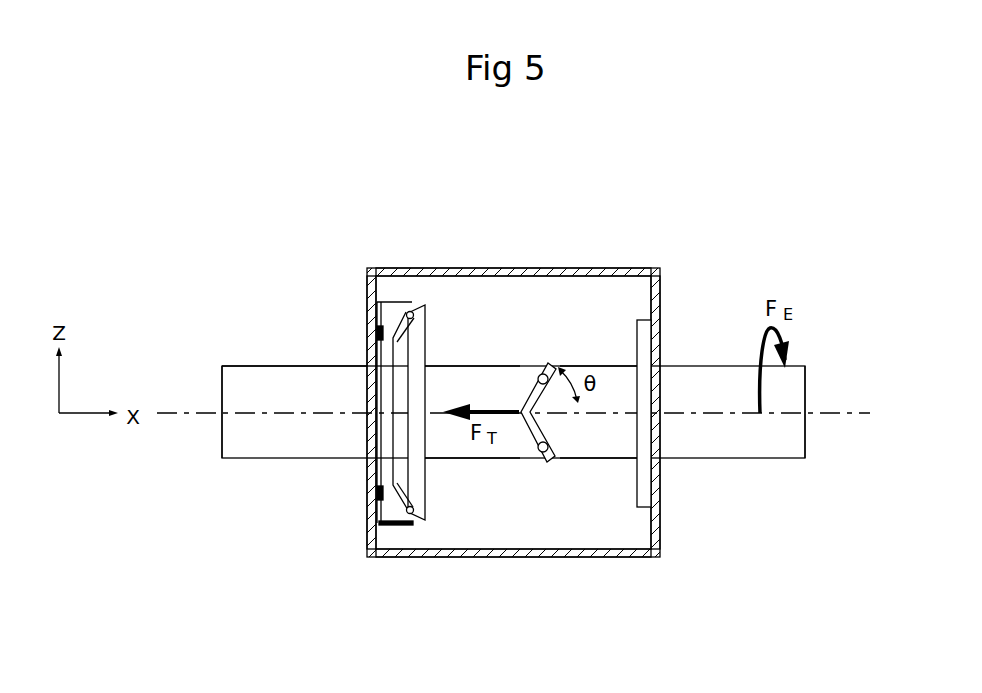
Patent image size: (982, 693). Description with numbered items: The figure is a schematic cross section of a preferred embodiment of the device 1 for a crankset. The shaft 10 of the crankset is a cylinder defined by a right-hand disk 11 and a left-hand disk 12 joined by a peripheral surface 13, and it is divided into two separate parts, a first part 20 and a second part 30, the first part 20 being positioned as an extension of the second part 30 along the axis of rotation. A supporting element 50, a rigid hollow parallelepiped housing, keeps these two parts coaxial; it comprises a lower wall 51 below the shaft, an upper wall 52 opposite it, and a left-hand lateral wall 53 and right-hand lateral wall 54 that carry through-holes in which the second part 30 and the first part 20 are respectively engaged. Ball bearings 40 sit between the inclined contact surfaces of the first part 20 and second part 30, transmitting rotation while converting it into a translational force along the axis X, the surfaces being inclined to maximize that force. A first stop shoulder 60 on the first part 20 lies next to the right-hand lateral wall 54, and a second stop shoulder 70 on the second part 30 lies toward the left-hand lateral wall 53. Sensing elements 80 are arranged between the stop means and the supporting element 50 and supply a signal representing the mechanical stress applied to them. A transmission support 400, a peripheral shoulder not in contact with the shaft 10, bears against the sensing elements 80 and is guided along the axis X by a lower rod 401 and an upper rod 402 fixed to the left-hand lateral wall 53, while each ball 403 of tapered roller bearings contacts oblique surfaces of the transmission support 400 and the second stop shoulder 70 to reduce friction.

The device 1 is at (619, 388).
The shaft of the crankset 10 is at (702, 412).
The right-hand disk 11 is at (806, 380).
The left-hand disk 12 is at (221, 380).
The peripheral surface 13 is at (251, 366).
The first part 20 is at (618, 380).
The second part 30 is at (497, 380).
The ball bearings 40 is at (545, 374).
The supporting element 50 is at (366, 266).
The lower wall 51 is at (548, 555).
The upper wall 52 is at (558, 267).
The left-hand lateral wall 53 is at (371, 541).
The right-hand lateral wall 54 is at (656, 543).
The first stop shoulder 60 is at (653, 365).
The second stop shoulder 70 is at (390, 395).
The sensing element 80 is at (377, 333).
The transmission support 400 is at (397, 413).
The lower rod 401 is at (382, 526).
The upper rod 402 is at (382, 300).
The ball 403 is at (414, 310).